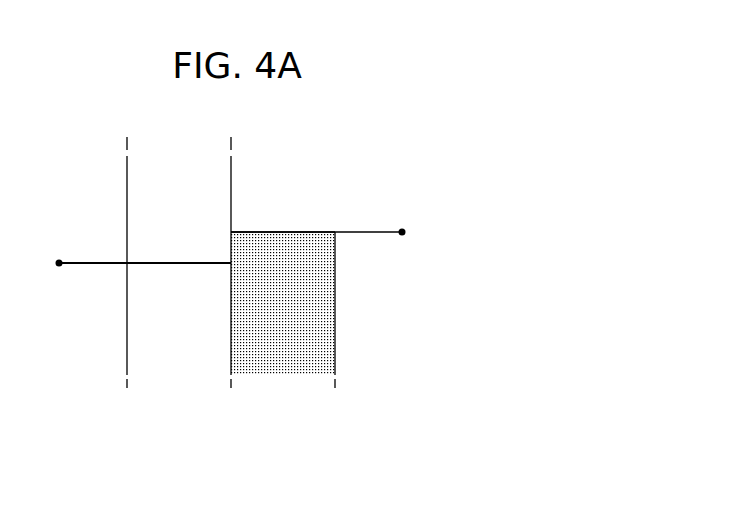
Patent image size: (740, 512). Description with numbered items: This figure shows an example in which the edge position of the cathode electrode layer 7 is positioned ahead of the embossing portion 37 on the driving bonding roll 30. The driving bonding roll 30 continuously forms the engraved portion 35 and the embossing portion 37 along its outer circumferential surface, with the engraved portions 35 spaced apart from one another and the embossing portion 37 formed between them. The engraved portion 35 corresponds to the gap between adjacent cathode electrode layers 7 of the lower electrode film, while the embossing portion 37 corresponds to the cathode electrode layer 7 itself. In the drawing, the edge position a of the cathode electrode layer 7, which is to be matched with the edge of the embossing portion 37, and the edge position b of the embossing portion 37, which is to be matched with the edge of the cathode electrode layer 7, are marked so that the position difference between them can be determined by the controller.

The driving bonding roll 30 is at (229, 305).
The engraved portion 35 is at (140, 200).
The embossing portion 37 is at (140, 330).
The cathode electrode layer 7 is at (322, 330).